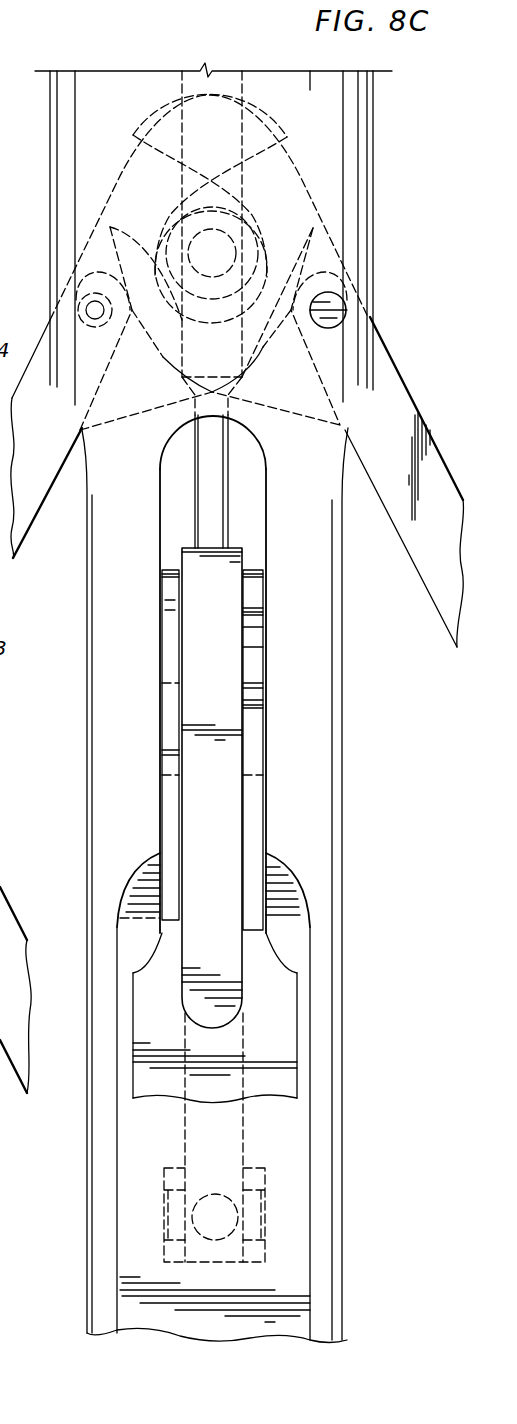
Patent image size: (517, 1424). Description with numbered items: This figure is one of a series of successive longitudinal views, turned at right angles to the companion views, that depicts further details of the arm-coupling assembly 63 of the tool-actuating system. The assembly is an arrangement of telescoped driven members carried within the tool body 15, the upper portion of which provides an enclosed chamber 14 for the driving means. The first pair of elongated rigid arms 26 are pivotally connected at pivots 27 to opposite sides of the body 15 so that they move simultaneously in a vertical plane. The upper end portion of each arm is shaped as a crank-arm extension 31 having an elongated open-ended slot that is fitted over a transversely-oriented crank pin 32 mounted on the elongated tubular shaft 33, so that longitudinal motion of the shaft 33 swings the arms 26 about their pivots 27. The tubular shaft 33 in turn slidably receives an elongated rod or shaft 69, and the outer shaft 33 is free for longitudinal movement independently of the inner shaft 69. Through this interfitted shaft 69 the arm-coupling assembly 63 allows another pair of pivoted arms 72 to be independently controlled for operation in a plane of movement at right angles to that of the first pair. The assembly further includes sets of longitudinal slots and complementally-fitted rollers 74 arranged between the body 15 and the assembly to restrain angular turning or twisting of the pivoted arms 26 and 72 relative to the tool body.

The enclosed chamber 14 is at (1, 320).
The tool body 15 is at (67, 173).
The first pair of elongated rigid arms 26 is at (40, 480).
The pivotal connection 27 is at (333, 303).
The crank-arm extension 31 is at (283, 180).
The crank pin 32 is at (220, 253).
The tubular shaft 33 is at (228, 78).
The arm-coupling assembly 63 is at (66, 687).
The rod or shaft 69 is at (207, 530).
The second pair of pivoted arms 72 is at (253, 813).
The rollers 74 is at (267, 1183).